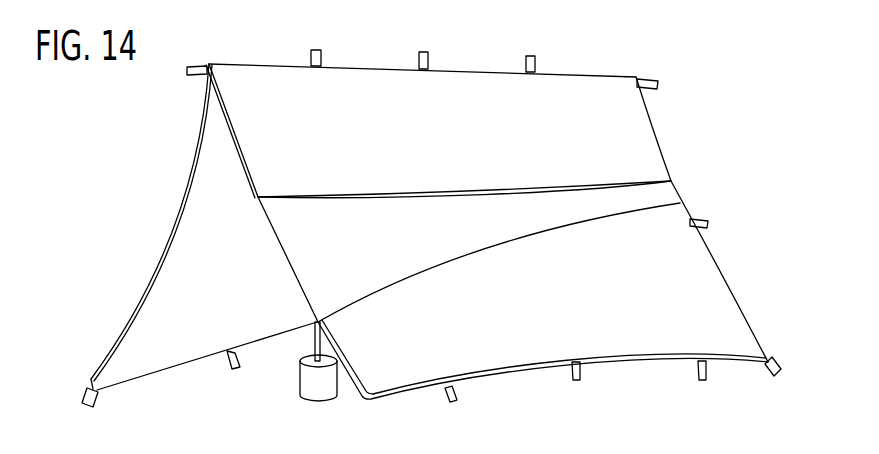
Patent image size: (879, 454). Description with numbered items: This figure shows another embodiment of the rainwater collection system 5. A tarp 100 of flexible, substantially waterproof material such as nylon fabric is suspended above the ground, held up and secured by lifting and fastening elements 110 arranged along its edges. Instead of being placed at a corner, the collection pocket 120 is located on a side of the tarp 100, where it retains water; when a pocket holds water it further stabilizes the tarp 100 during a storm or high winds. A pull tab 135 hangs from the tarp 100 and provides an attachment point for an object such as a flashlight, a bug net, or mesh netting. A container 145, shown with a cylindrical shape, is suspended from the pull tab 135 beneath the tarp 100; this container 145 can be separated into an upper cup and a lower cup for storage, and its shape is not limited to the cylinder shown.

The rainwater collection system 5 is at (693, 94).
The tarp 100 is at (467, 136).
The lifting and fastening elements 110 is at (698, 219).
The collection pocket 120 is at (383, 242).
The pull tab 135 is at (308, 343).
The container 145 is at (318, 396).